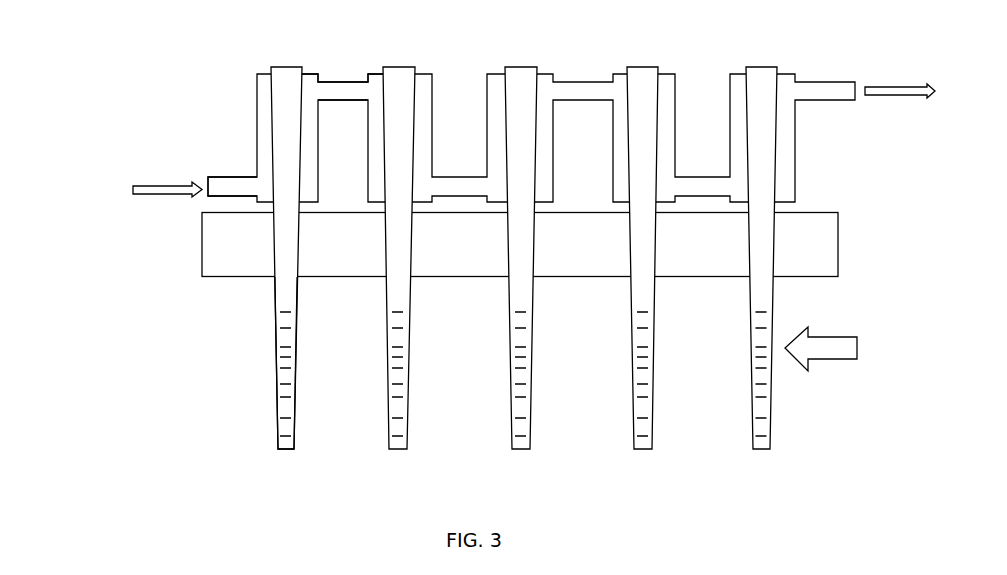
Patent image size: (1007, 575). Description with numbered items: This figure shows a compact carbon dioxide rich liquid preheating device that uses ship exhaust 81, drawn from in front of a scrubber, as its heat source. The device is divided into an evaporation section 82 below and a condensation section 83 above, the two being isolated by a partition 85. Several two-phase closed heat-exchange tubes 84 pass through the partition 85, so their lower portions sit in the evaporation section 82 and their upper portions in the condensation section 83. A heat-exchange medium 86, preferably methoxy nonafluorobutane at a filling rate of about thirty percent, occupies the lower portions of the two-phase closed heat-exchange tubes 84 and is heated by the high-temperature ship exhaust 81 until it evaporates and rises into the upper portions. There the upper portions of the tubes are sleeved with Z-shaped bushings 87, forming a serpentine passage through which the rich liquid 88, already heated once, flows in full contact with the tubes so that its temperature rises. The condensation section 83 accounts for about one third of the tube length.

The ship exhaust 81 is at (857, 348).
The evaporation section 82 is at (277, 348).
The condensation section 83 is at (270, 115).
The two-phase closed heat-exchange tube 84 is at (275, 291).
The partition 85 is at (202, 245).
The heat-exchange medium 86 is at (290, 397).
The Z-shaped bushing 87 is at (337, 80).
The rich liquid 88 is at (182, 183).